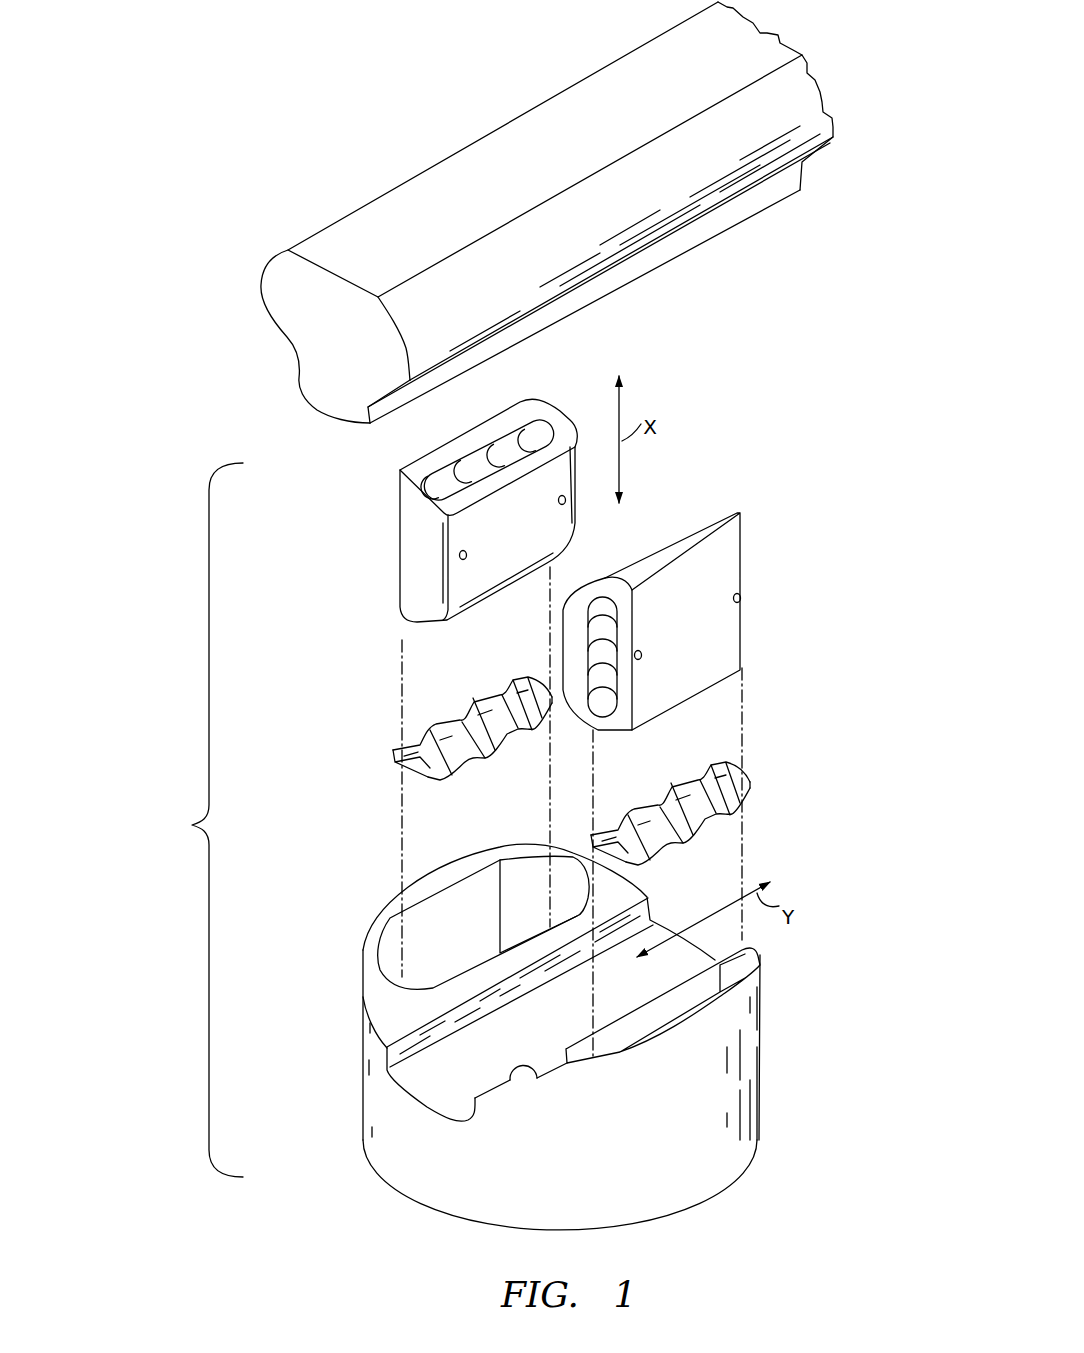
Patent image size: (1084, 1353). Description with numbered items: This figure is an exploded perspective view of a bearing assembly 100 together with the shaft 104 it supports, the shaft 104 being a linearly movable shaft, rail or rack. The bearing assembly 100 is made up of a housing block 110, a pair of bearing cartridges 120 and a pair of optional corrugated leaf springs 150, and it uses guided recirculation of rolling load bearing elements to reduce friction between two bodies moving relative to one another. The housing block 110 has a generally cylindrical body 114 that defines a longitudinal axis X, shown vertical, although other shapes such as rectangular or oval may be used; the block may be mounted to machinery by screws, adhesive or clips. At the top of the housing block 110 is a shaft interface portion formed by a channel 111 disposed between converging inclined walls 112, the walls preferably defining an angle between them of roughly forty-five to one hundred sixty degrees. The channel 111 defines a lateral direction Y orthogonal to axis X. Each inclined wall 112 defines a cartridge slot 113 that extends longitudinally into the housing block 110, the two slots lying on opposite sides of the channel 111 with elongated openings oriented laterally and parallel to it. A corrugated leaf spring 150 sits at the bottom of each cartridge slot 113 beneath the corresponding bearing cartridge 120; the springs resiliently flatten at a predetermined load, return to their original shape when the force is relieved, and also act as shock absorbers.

The bearing assembly 100 is at (189, 820).
The shaft 104 is at (700, 94).
The housing block 110 is at (613, 1184).
The channel 111 is at (440, 1087).
The inclined walls 112 is at (383, 1003).
The cartridge slot 113 is at (428, 945).
The cylindrical body 114 is at (667, 1202).
The bearing cartridges 120 is at (553, 668).
The corrugated leaf spring 150 is at (580, 823).